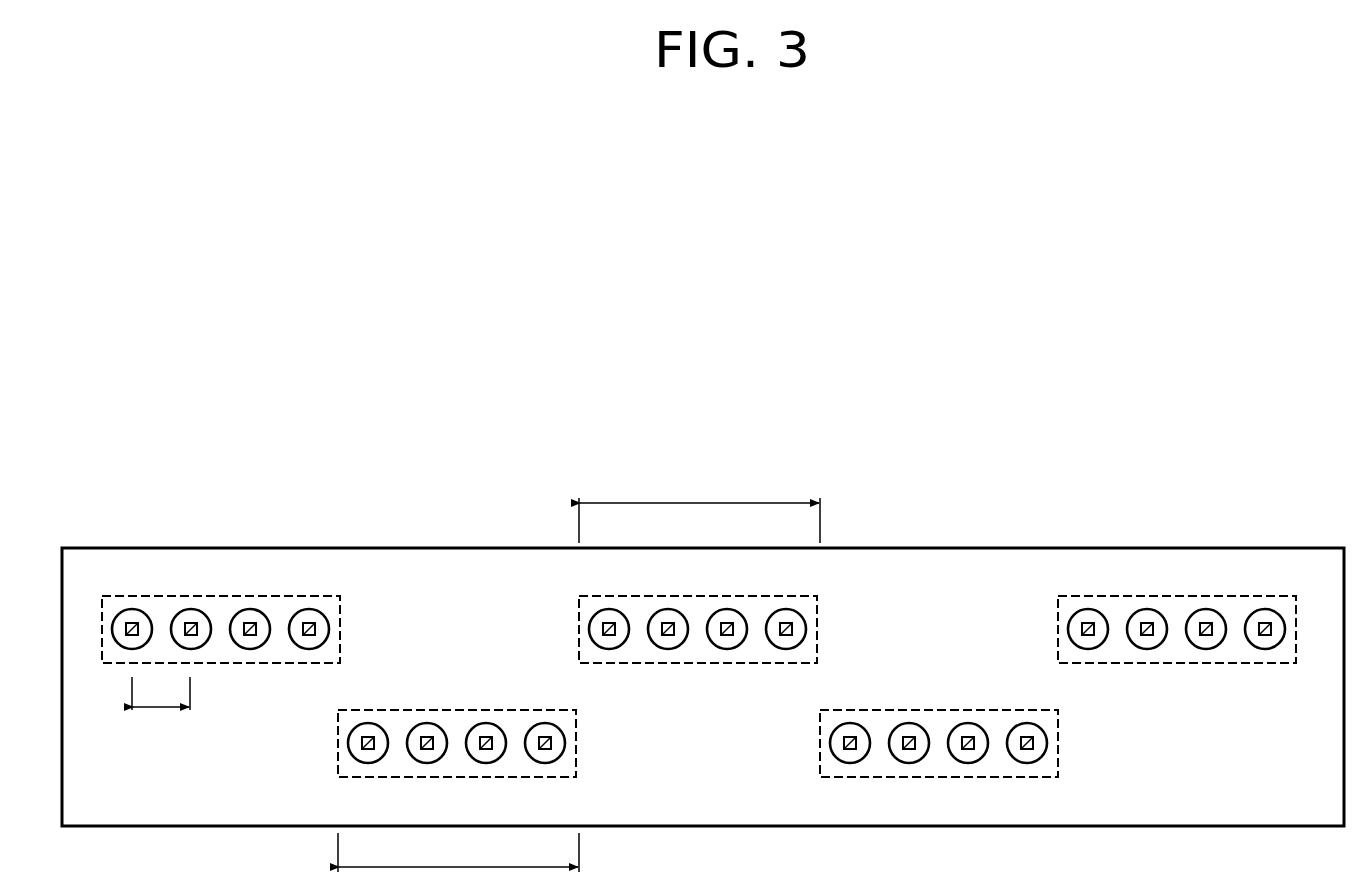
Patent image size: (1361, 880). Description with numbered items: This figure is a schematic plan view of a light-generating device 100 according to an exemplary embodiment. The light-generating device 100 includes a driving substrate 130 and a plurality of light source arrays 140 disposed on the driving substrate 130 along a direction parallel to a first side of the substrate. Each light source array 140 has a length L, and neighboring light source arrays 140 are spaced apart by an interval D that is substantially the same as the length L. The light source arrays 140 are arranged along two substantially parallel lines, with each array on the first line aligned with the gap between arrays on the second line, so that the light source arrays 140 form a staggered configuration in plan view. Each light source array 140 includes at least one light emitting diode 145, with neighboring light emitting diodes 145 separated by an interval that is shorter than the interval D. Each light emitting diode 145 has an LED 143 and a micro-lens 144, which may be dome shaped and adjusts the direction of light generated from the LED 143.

The light-generating device 100 is at (968, 528).
The driving substrate 130 is at (335, 553).
The light source array 140 is at (262, 596).
The LED 143 is at (130, 620).
The micro-lens 144 is at (137, 620).
The light emitting diode 145 is at (68, 470).